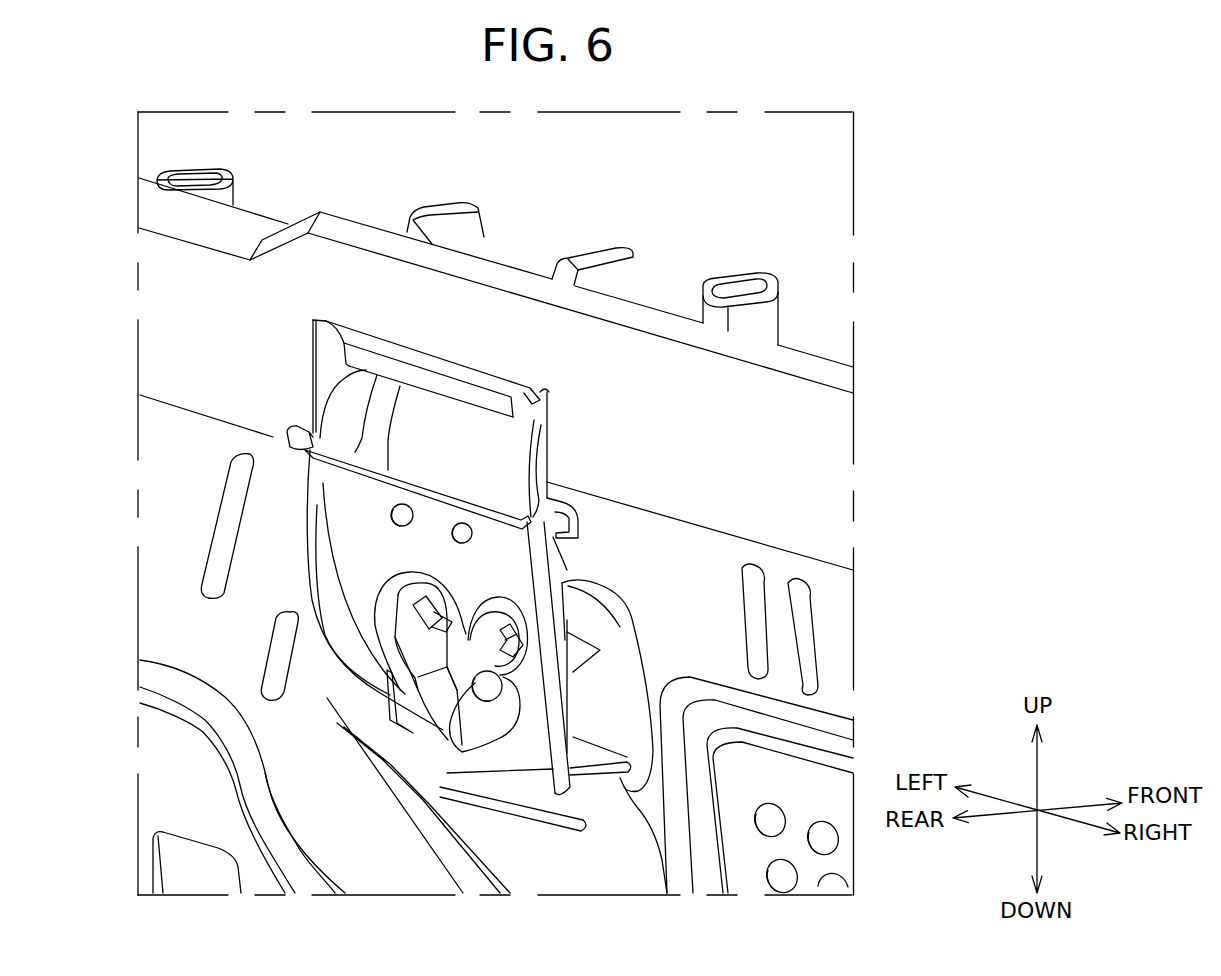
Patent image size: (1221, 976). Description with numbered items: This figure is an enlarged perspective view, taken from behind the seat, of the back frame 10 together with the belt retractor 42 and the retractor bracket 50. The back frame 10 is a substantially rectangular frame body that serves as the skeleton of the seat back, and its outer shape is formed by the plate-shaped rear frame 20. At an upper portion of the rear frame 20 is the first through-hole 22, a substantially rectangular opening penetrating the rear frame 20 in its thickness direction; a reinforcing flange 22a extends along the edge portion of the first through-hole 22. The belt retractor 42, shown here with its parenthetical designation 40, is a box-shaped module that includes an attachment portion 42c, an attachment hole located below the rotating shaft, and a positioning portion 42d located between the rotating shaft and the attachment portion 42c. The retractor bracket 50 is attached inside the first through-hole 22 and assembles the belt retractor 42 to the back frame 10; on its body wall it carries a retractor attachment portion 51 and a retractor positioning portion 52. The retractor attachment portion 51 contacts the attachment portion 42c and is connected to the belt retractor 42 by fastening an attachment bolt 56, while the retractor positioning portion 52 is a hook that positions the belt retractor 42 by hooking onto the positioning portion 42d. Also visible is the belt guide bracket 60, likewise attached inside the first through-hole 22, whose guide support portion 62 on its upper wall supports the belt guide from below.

The back frame 10 is at (128, 146).
The rear frame 20 is at (335, 204).
The first through-hole 22 is at (318, 346).
The reinforcing flange 22a is at (323, 563).
The lock device 40 is at (501, 557).
The belt retractor 42 is at (494, 446).
The attachment portion 42c is at (492, 617).
The positioning portion 42d is at (426, 595).
The retractor bracket 50 is at (578, 721).
The retractor attachment portion 51 is at (518, 730).
The retractor positioning portion 52 is at (414, 620).
The attachment bolt 56 is at (468, 718).
The belt guide bracket 60 is at (489, 204).
The guide support portion 62 is at (528, 258).